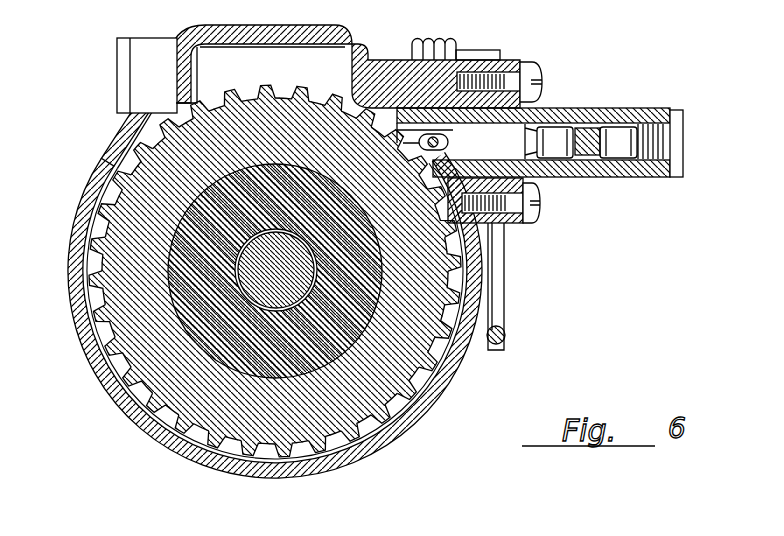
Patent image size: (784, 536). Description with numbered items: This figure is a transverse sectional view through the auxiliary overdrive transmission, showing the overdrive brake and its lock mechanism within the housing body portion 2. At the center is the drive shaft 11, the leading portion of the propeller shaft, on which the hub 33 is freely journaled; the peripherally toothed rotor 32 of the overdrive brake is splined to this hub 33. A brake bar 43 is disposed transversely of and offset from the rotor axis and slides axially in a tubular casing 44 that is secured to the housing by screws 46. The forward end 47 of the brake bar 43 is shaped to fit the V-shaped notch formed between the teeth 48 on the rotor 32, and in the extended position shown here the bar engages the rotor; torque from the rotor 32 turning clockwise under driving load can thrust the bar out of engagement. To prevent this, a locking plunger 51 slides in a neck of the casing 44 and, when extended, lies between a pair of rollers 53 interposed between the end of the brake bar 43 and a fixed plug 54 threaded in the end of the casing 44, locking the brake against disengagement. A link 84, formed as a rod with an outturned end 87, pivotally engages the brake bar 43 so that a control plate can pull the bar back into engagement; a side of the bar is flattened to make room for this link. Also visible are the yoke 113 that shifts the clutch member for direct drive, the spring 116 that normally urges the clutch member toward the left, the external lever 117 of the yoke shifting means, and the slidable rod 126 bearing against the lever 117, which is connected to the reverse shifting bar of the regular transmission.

The body portion 2 is at (85, 178).
The drive shaft 11 is at (260, 287).
The rotor 32 is at (113, 342).
The hub 33 is at (223, 341).
The brake bar 43 is at (512, 140).
The tubular casing 44 is at (604, 111).
The screws 46 is at (530, 72).
The forward end 47 is at (398, 140).
The teeth 48 is at (332, 97).
The plunger 51 is at (587, 150).
The rollers 53 is at (550, 153).
The plug 54 is at (684, 139).
The link 84 is at (448, 150).
The outturned end 87 is at (442, 145).
The yoke 113 is at (242, 63).
The spring 116 is at (432, 42).
The lever 117 is at (497, 275).
The slidable rod 126 is at (506, 334).